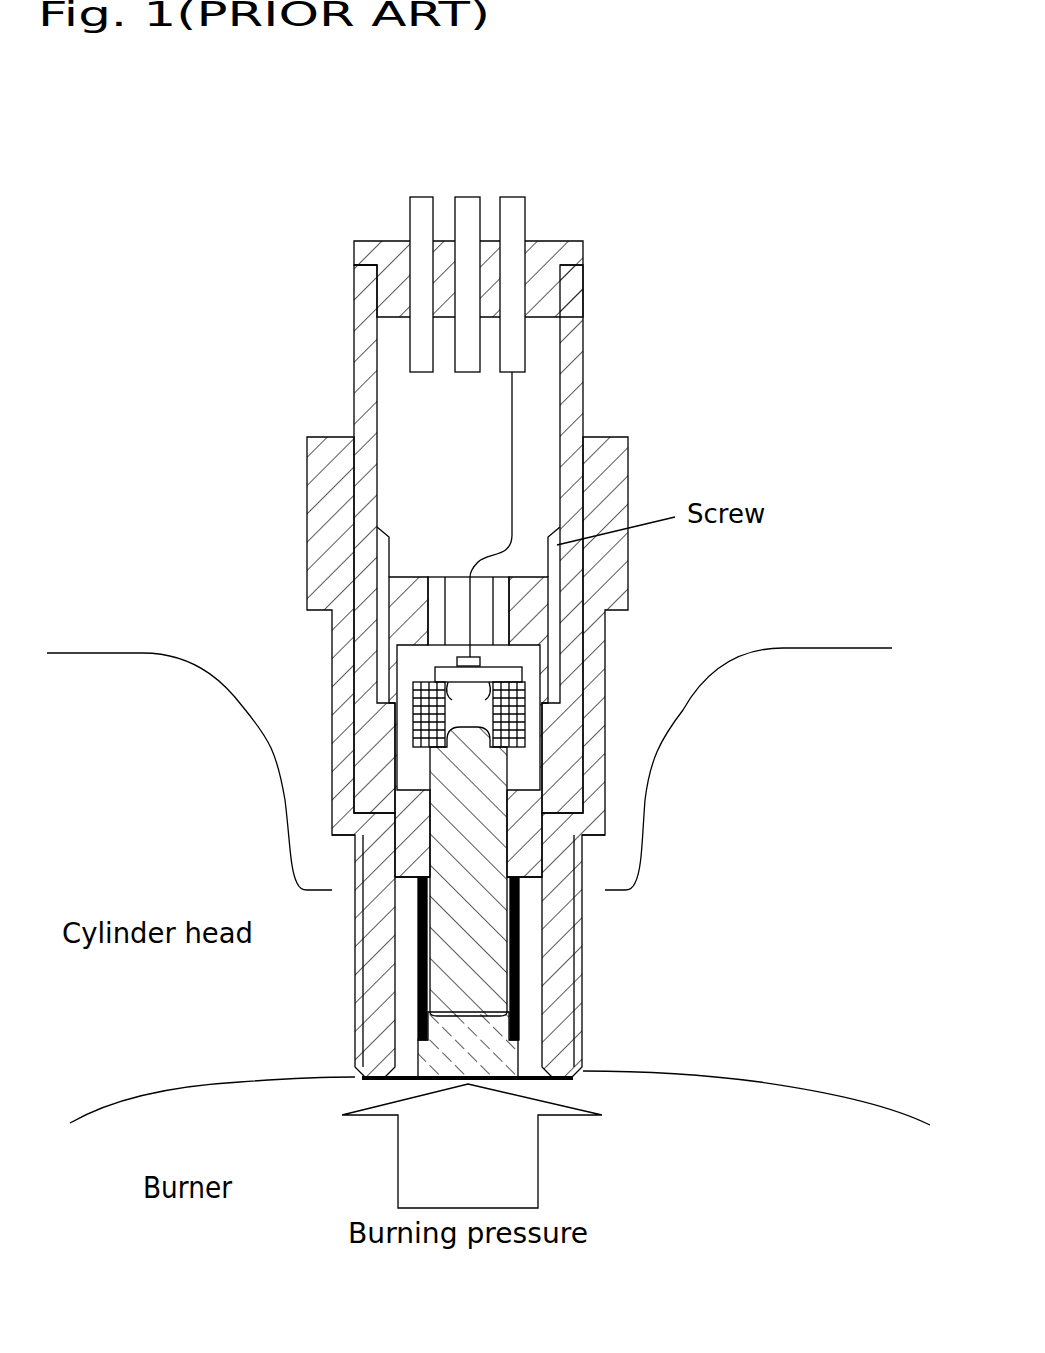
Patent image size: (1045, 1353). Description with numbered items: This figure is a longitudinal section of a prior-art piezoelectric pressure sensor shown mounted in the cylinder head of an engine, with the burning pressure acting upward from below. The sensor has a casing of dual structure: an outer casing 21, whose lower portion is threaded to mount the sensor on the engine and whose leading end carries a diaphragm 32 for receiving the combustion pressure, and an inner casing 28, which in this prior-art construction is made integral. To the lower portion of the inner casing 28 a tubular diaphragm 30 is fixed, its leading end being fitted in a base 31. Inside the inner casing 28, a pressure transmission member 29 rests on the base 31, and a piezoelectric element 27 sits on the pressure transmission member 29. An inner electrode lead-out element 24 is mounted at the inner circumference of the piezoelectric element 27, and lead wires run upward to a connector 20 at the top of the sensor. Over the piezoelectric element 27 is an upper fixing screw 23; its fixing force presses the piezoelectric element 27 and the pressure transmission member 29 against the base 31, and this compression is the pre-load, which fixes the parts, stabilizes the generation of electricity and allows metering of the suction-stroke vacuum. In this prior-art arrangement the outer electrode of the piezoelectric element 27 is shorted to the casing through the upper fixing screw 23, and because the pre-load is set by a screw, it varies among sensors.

The connector 20 is at (553, 252).
The outer casing 21 is at (620, 437).
The upper fixing screw 23 is at (530, 607).
The inner electrode lead-out element 24 is at (505, 665).
The piezoelectric element 27 is at (522, 700).
The inner casing 28 is at (575, 500).
The pressure transmission member 29 is at (488, 945).
The tubular diaphragm 30 is at (520, 968).
The base 31 is at (495, 1055).
The diaphragm 32 is at (540, 1080).